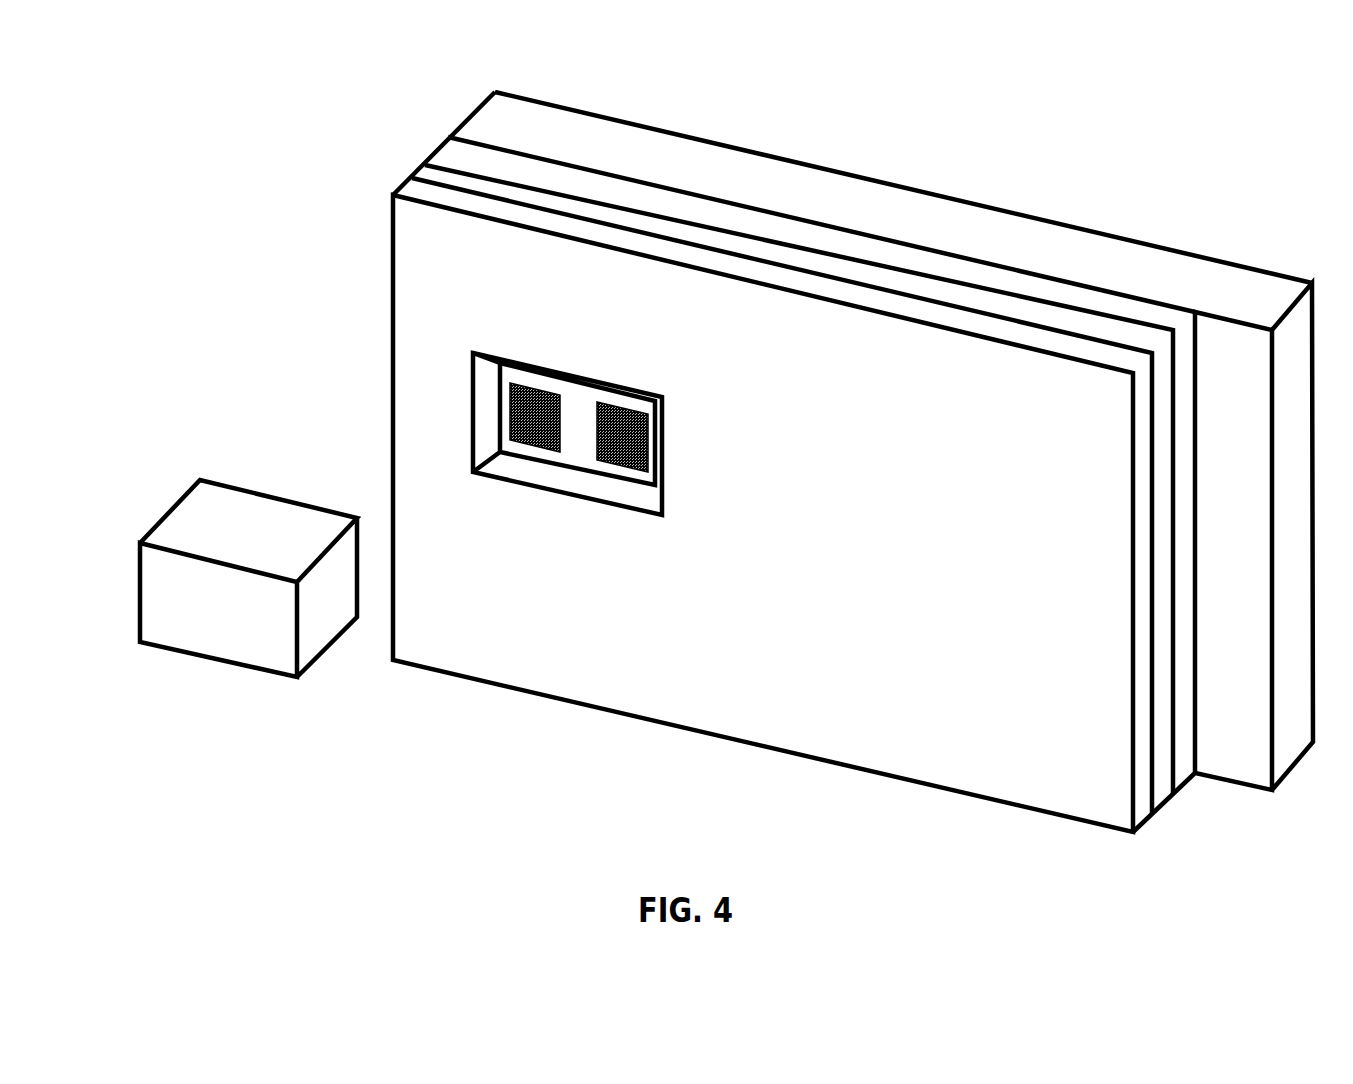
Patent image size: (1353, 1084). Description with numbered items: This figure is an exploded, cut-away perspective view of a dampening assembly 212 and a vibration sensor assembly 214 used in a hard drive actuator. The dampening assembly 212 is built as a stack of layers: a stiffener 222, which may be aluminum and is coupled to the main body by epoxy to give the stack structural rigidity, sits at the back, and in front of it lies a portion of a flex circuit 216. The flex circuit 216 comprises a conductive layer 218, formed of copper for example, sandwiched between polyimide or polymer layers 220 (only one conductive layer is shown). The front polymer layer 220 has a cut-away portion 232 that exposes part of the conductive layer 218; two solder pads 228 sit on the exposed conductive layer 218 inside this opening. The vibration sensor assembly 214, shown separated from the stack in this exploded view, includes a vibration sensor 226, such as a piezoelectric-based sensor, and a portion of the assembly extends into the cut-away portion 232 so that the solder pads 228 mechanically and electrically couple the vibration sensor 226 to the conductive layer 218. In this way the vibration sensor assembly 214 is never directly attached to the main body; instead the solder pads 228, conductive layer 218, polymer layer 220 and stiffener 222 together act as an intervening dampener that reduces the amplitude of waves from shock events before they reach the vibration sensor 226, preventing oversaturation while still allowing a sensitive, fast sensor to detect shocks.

The dampening assembly 212 is at (788, 481).
The vibration sensor assembly 214 is at (223, 558).
The flex circuit 216 is at (1150, 838).
The conductive layer 218 is at (423, 165).
The polyimide or polymer layer 220 is at (448, 137).
The stiffener 222 is at (491, 104).
The vibration sensor 226 is at (236, 622).
The solder pads 228 is at (527, 395).
The cut-away portion 232 is at (618, 492).